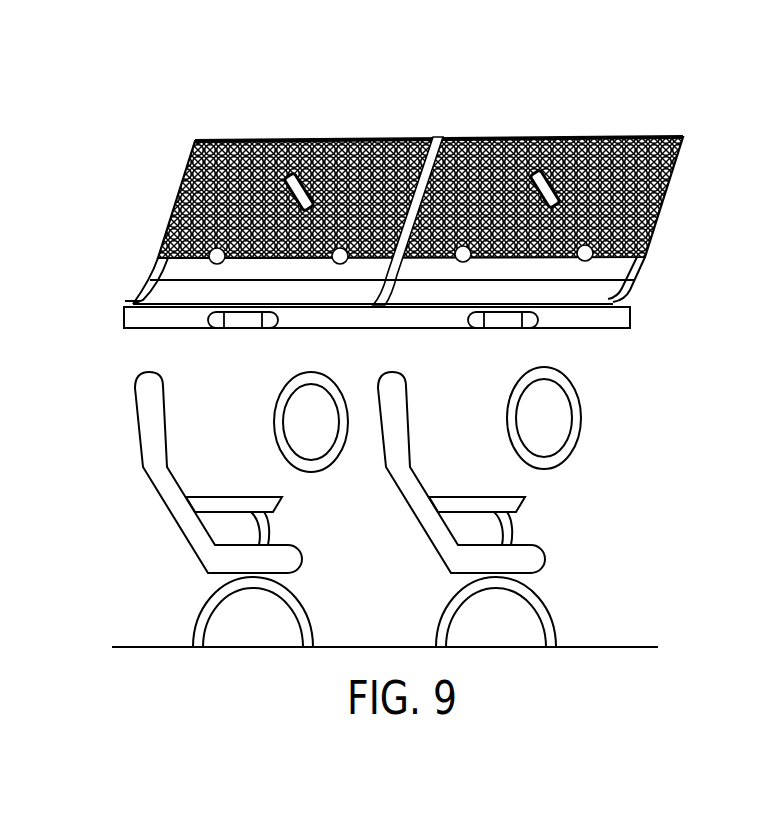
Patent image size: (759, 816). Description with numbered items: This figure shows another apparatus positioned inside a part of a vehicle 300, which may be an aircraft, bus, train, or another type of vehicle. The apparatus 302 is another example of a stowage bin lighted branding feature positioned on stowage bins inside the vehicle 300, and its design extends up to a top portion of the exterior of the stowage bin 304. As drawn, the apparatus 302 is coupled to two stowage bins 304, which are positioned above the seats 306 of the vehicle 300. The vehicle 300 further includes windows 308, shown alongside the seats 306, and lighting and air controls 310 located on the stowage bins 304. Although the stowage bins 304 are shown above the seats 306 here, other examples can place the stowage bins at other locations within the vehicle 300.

The vehicle 300 is at (406, 224).
The apparatus 302 is at (140, 210).
The stowage bin 304 is at (650, 277).
The seat 306 is at (120, 425).
The window 308 is at (605, 407).
The lighting and air control 310 is at (235, 345).